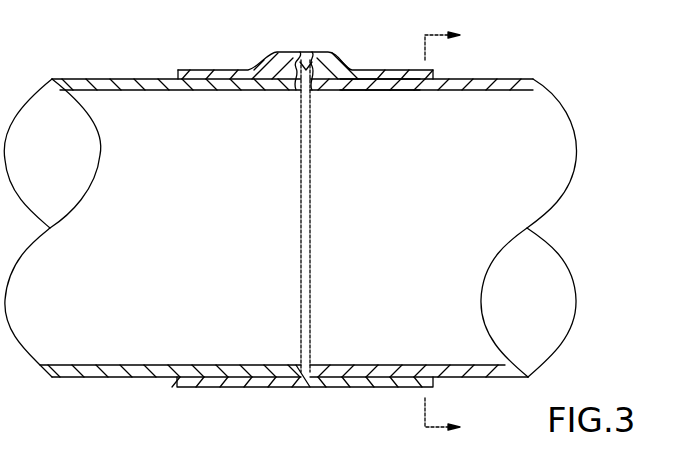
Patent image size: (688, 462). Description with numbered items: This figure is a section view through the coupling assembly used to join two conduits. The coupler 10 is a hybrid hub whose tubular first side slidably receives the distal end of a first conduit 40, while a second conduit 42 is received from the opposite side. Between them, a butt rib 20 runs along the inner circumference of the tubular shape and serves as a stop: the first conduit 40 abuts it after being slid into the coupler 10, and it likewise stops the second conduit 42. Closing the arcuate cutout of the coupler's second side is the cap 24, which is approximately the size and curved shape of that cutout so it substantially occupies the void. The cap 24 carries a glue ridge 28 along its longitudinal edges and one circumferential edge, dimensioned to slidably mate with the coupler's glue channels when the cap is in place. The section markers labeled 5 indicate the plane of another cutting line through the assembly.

The coupler 10 is at (217, 72).
The butt rib 20 is at (300, 87).
The cap 24 is at (378, 77).
The glue ridge 28 is at (306, 62).
The first conduit 40 is at (115, 79).
The second conduit 42 is at (500, 79).
The section line 5- 5 is at (454, 232).